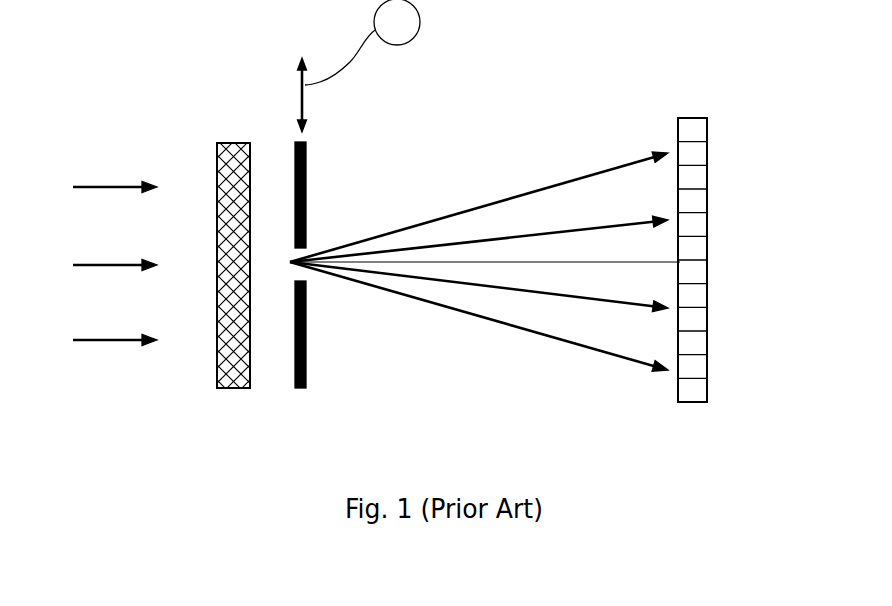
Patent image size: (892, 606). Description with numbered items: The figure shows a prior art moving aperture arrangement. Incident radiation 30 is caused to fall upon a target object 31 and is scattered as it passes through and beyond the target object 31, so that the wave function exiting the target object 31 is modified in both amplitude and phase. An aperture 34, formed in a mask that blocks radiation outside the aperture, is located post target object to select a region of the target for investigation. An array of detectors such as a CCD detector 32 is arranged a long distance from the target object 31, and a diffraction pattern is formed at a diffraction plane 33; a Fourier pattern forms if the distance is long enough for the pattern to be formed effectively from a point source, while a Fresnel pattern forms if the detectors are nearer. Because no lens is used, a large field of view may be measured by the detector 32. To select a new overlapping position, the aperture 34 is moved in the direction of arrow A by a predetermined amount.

The incident radiation 30 is at (80, 182).
The target object 31 is at (217, 143).
The CCD detector 32 is at (693, 118).
The diffraction plane 33 is at (661, 131).
The aperture 34 is at (306, 374).
The arrow A is at (362, 42).